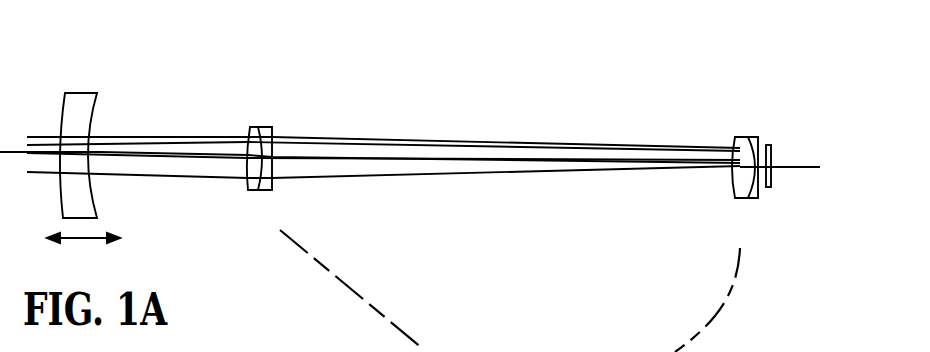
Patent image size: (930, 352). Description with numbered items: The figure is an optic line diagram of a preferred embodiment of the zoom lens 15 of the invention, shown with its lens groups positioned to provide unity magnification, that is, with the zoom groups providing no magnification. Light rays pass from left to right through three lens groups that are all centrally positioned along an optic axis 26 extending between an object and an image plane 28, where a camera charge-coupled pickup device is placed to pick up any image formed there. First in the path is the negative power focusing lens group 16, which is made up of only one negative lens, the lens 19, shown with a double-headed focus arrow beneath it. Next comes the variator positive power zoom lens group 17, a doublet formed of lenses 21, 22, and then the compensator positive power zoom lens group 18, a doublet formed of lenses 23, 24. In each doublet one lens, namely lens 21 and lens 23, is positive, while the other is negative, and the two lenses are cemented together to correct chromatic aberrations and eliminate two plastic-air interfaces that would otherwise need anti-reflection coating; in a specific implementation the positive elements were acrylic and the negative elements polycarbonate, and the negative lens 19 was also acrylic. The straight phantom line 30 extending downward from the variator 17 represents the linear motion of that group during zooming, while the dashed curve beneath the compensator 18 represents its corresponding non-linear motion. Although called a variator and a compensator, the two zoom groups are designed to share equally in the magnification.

The zoom lens 15 is at (476, 104).
The negative power focusing lens group 16 is at (108, 145).
The variator positive power zoom lens group 17 is at (265, 123).
The compensator positive power zoom lens group 18 is at (743, 144).
The negative lens 19 is at (97, 100).
The positive lens of variator doublet 21 is at (250, 128).
The negative lens of variator doublet 22 is at (275, 128).
The positive lens of compensator doublet 23 is at (735, 138).
The negative lens of compensator doublet 24 is at (755, 137).
The optic axis 26 is at (795, 168).
The image plane 28 is at (772, 158).
The straight phantom line 30 is at (420, 348).